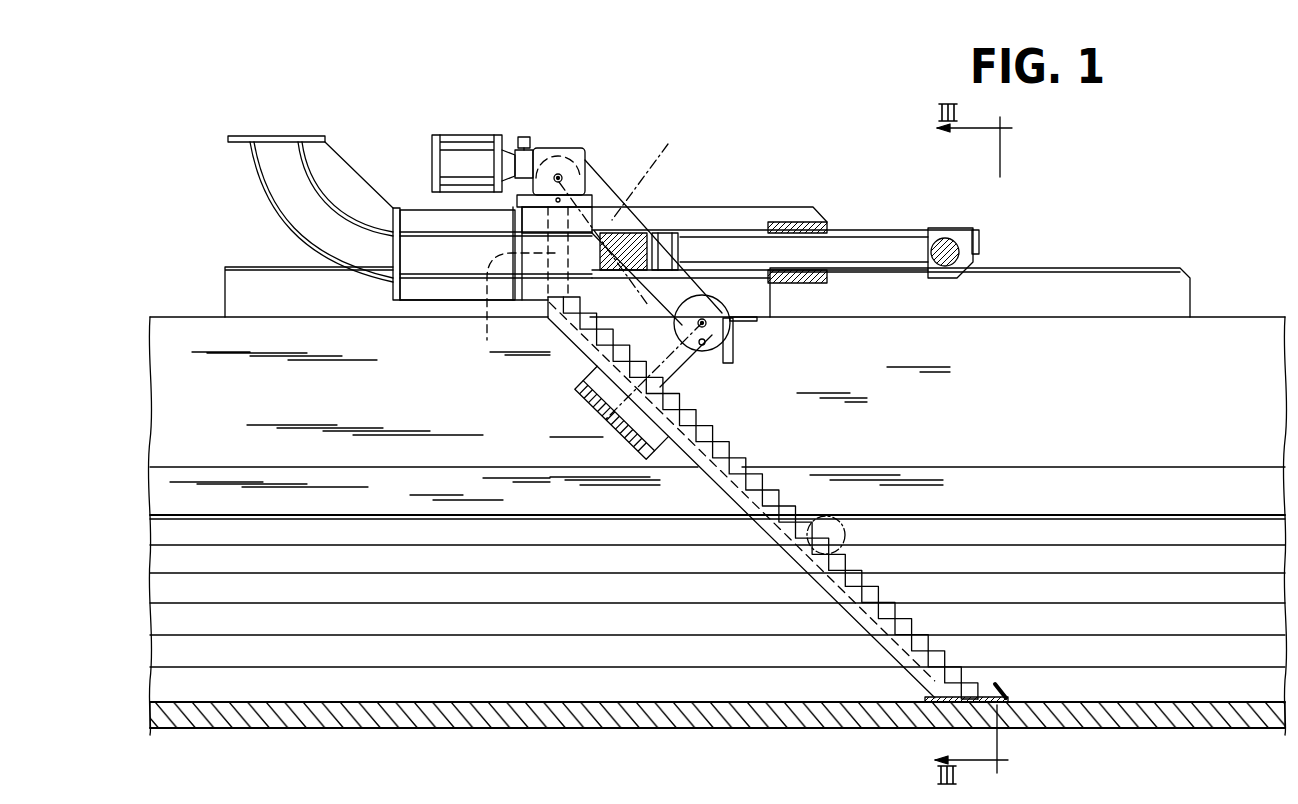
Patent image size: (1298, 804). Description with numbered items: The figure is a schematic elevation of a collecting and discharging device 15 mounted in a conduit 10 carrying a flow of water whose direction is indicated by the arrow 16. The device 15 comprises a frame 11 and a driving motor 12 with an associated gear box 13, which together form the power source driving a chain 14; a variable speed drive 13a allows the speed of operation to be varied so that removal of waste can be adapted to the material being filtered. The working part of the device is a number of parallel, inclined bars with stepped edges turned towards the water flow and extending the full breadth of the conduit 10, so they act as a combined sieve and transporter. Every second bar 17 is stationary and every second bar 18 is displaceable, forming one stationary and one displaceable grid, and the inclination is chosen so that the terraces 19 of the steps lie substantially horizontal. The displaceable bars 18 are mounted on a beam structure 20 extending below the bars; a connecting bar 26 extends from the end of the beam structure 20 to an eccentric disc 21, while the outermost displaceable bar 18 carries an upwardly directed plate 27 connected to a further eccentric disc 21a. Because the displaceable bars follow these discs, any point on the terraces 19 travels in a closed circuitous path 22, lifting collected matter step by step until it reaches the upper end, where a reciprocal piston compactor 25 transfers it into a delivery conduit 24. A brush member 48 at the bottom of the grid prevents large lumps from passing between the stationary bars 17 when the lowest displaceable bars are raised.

The conduit 10 is at (178, 336).
The frame 11 is at (256, 289).
The driving motor 12 is at (461, 150).
The gear box 13 is at (546, 148).
The variable speed drive 13a is at (522, 137).
The chain 14 is at (648, 166).
The collecting and discharging device 15 is at (826, 596).
The arrow 16 is at (514, 613).
The stationary bar 17 is at (898, 603).
The displaceable bar 18 is at (890, 625).
The terraces 19 is at (740, 450).
The beam structure 20 is at (585, 400).
The eccentric disc 21 is at (742, 327).
The eccentric disc 21a is at (562, 170).
The closed circuitous path 22 is at (840, 522).
The delivery conduit 24 is at (277, 185).
The reciprocal piston compactor 25 is at (728, 252).
The connecting bar 26 is at (684, 362).
The upwardly directed plate 27 is at (484, 342).
The brush member 48 is at (1006, 694).